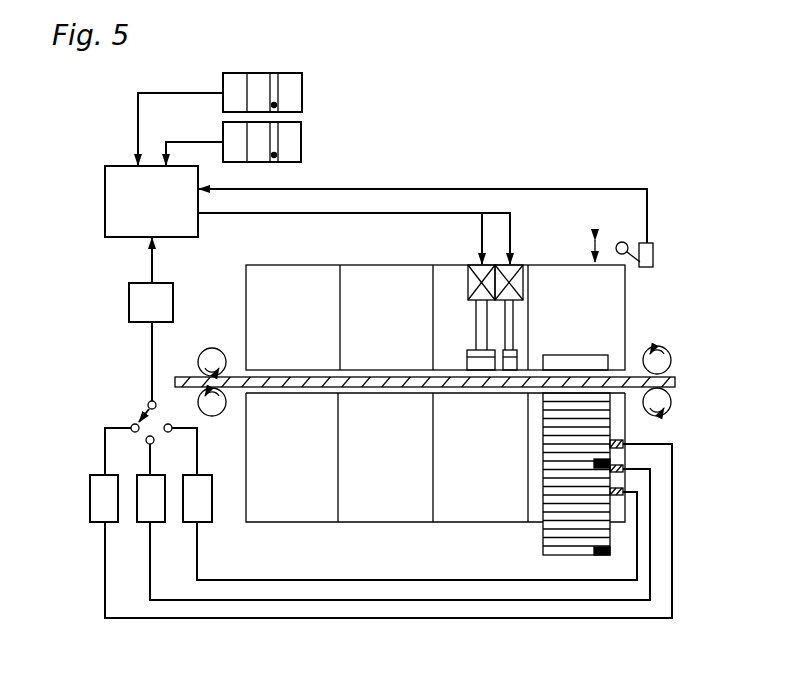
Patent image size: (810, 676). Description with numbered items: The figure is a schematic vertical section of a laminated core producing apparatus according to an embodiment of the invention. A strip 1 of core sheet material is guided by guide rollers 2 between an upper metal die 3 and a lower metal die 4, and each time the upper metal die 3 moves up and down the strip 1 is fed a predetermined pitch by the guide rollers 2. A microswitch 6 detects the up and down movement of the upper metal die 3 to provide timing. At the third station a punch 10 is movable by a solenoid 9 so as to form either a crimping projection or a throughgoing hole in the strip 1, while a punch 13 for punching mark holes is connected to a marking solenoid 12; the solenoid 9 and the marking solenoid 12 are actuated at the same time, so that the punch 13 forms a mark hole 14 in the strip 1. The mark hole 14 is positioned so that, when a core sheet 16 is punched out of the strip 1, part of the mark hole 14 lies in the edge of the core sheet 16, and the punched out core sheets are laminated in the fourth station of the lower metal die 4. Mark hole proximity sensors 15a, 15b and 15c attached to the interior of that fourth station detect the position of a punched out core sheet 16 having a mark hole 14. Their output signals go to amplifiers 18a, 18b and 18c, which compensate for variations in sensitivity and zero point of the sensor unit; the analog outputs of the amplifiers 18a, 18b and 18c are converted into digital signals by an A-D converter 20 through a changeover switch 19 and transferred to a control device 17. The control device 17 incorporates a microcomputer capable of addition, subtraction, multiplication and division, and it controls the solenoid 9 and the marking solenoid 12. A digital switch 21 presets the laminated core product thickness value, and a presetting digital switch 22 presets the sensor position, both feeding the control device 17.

The strip 1 is at (188, 376).
The guide rollers 2 is at (212, 347).
The upper metal die 3 is at (290, 282).
The lower metal die 4 is at (260, 515).
The microswitch 6 is at (653, 251).
The solenoid 9 is at (480, 266).
The punch 10 is at (473, 360).
The marking solenoid 12 is at (511, 268).
The punch for punching mark holes 13 is at (512, 360).
The mark hole 14 is at (596, 462).
The mark hole proximity sensor 15a is at (621, 443).
The mark hole proximity sensor 15b is at (621, 468).
The mark hole proximity sensor 15c is at (621, 495).
The core sheet 16 is at (557, 463).
The control device 17 is at (115, 188).
The amplifier 18a is at (92, 518).
The amplifier 18b is at (142, 518).
The amplifier 18c is at (187, 518).
The changeover switch 19 is at (147, 403).
The A-D converter 20 is at (140, 298).
The digital switch 21 is at (301, 132).
The presetting digital switch 22 is at (302, 83).